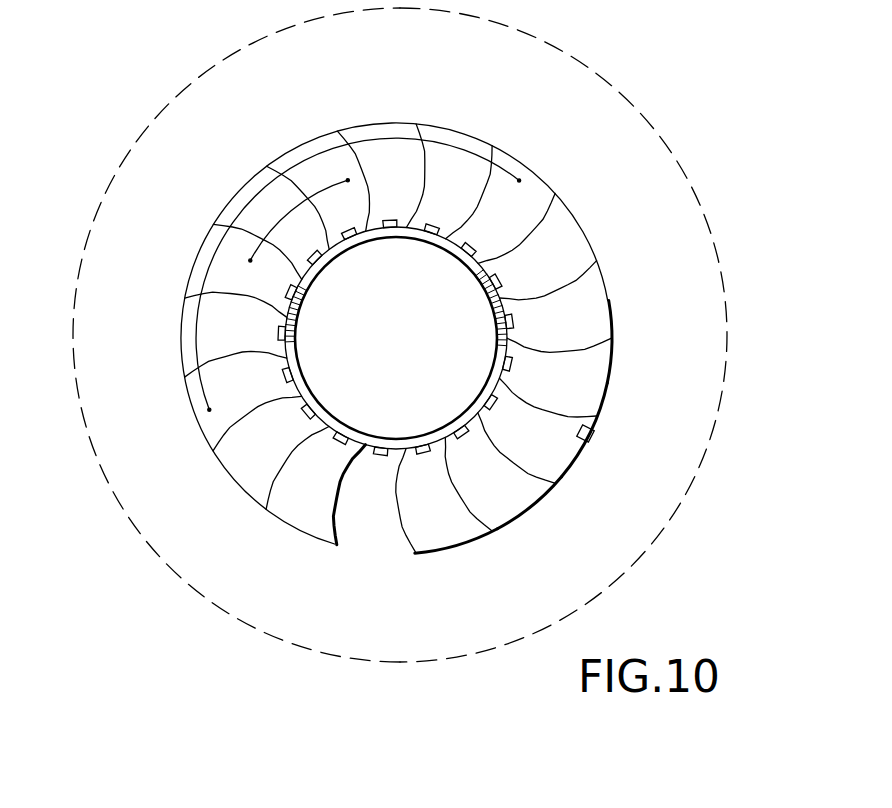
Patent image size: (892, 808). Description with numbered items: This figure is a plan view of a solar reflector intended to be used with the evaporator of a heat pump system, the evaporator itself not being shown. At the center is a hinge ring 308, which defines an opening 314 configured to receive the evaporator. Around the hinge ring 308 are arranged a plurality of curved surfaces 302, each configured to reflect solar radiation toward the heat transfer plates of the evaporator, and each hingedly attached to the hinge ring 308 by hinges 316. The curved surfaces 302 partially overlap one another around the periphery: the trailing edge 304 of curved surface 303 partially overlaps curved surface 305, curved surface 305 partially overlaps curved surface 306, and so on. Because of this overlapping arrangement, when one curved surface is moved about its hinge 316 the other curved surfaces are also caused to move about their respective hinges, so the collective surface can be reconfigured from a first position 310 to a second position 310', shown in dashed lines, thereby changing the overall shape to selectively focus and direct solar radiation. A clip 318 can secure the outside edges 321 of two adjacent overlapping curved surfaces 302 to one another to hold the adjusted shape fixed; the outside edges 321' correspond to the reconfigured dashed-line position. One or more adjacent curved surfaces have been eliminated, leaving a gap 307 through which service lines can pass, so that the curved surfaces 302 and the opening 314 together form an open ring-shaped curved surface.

The curved surfaces 302 is at (603, 273).
The curved surface 303 is at (433, 553).
The trailing edge 304 is at (455, 530).
The curved surface 305 is at (528, 510).
The curved surface 306 is at (569, 466).
The gap 307 is at (370, 527).
The hinge ring 308 is at (478, 407).
The first position 310 is at (396, 313).
The second position 310' is at (586, 335).
The opening 314 is at (386, 362).
The hinges 316 is at (390, 224).
The clip 318 is at (597, 440).
The outside edges 321 is at (200, 354).
The outside edges 321' is at (236, 335).